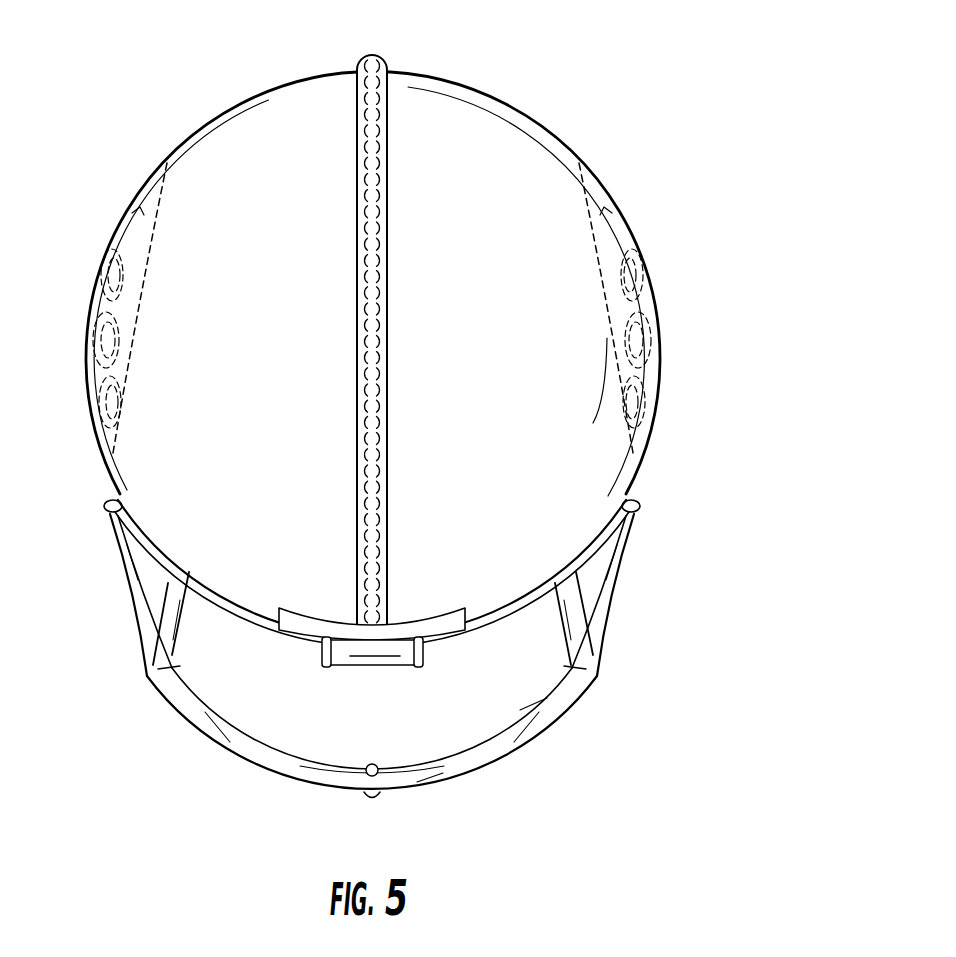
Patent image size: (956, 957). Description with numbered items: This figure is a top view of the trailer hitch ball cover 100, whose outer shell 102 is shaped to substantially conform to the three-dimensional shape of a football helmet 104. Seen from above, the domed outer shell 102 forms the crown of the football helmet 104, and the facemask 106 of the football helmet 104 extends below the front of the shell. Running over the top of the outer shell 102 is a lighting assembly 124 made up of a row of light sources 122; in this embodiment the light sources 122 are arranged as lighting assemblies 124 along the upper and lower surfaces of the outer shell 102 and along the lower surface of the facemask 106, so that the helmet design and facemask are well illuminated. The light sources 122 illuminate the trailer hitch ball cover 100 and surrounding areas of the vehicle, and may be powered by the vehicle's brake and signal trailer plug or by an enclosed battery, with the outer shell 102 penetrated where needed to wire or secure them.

The trailer hitch ball cover 100 is at (365, 406).
The outer shell 102 is at (307, 73).
The football helmet 104 is at (493, 212).
The facemask 106 is at (510, 737).
The light sources 122 is at (366, 405).
The lighting assembly 124 is at (357, 510).